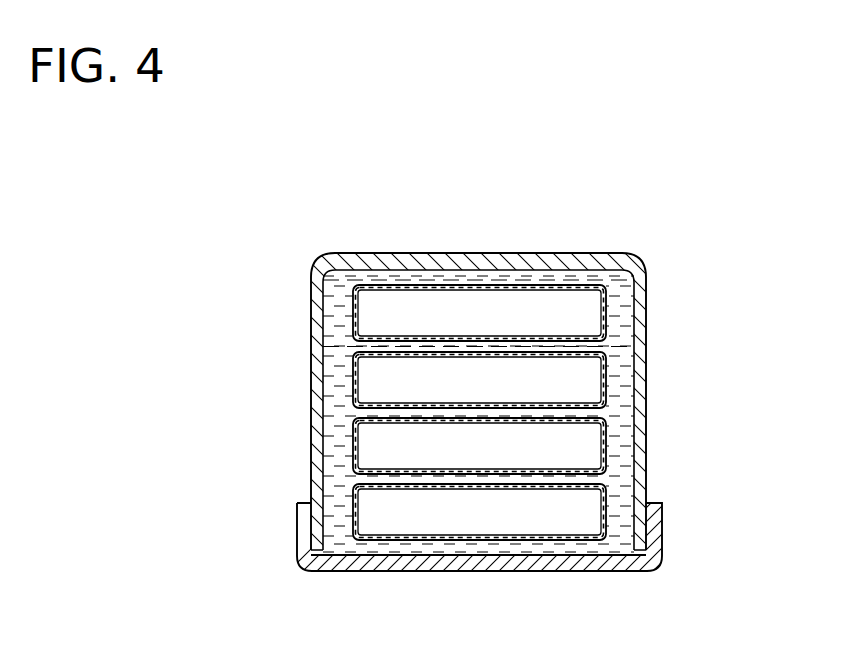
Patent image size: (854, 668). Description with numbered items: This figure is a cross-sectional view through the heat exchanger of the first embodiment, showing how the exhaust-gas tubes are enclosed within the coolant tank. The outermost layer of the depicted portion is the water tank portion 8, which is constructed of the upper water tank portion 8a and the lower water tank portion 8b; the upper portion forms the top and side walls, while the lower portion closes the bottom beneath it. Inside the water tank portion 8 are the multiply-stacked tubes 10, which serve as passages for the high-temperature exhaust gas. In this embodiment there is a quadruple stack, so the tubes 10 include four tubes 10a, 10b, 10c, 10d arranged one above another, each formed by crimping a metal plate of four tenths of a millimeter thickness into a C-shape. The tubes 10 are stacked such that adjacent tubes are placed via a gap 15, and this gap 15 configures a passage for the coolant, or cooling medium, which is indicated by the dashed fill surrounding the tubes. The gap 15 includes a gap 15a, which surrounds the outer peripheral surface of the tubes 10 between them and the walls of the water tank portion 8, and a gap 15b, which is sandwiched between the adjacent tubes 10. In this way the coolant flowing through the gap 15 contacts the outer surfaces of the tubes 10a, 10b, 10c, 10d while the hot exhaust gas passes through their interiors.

The water tank portion 8 is at (427, 396).
The upper water tank portion 8a is at (446, 253).
The lower water tank portion 8b is at (548, 567).
The tubes 10 is at (541, 377).
The tube 10a is at (611, 302).
The tube 10b is at (610, 386).
The tube 10c is at (610, 440).
The tube 10d is at (610, 495).
The gap 15 is at (526, 360).
The gap 15a is at (512, 270).
The gap 15b is at (585, 350).